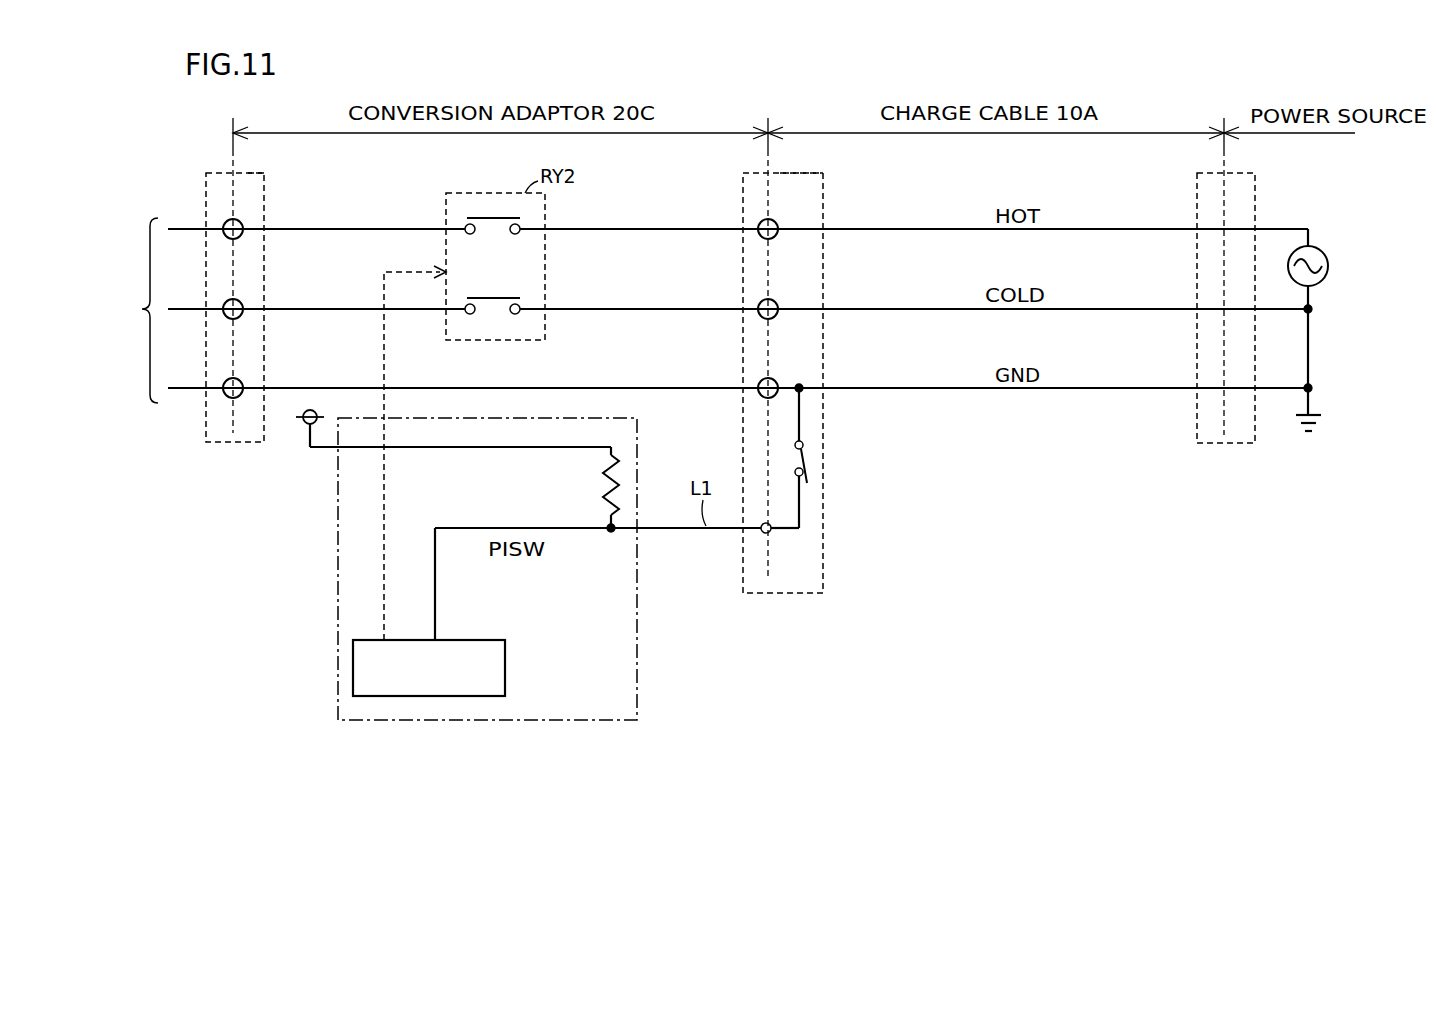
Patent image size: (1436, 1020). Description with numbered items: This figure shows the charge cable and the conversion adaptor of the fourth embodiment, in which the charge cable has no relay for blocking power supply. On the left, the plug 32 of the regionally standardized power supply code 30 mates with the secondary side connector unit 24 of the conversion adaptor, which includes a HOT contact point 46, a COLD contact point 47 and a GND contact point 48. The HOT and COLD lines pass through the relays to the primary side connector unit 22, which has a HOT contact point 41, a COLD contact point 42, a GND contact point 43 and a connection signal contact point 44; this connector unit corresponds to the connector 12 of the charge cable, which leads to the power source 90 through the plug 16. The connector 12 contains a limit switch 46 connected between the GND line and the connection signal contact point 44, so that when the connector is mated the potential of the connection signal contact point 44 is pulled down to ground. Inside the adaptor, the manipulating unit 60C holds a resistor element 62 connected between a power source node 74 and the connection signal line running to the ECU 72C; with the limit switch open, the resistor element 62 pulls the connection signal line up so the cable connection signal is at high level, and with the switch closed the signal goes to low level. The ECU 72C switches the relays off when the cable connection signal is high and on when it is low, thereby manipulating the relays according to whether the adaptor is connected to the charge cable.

The plug 32 is at (222, 173).
The secondary side connector unit 24 is at (250, 173).
The primary side connector unit 22 is at (760, 173).
The connector 12 is at (788, 173).
The plug of charge cable 16 is at (1212, 173).
The power supply code 30 is at (135, 310).
The HOT contact point / limit switch 46 is at (243, 222).
The COLD contact point 47 is at (243, 302).
The GND contact point 48 is at (243, 381).
The HOT contact point 41 is at (776, 222).
The COLD contact point 42 is at (776, 302).
The GND contact point 43 is at (776, 381).
The connection signal contact point 44 is at (770, 534).
The power source 90 is at (1329, 266).
The power source node 74 is at (308, 426).
The resistor element 62 is at (605, 490).
The manipulating unit 60C is at (338, 584).
The ECU 72C is at (353, 675).